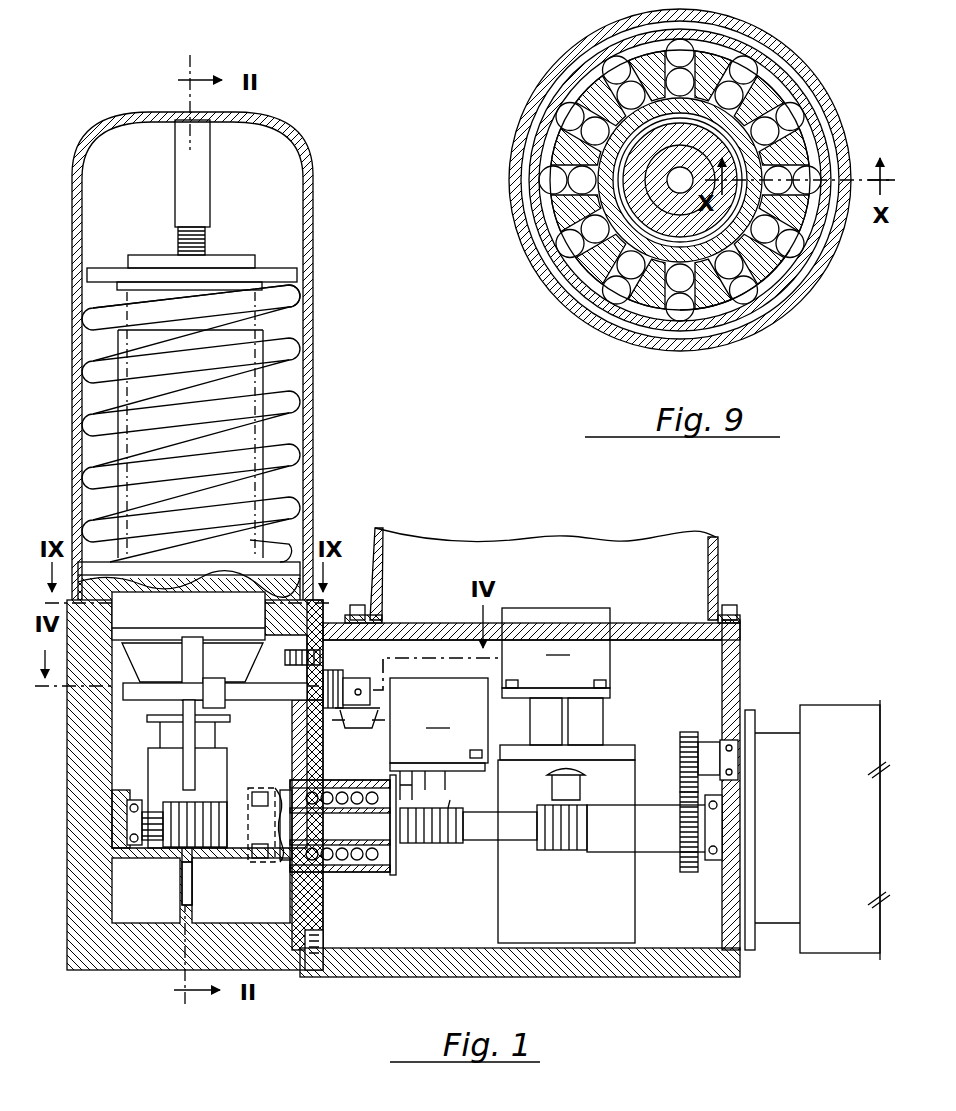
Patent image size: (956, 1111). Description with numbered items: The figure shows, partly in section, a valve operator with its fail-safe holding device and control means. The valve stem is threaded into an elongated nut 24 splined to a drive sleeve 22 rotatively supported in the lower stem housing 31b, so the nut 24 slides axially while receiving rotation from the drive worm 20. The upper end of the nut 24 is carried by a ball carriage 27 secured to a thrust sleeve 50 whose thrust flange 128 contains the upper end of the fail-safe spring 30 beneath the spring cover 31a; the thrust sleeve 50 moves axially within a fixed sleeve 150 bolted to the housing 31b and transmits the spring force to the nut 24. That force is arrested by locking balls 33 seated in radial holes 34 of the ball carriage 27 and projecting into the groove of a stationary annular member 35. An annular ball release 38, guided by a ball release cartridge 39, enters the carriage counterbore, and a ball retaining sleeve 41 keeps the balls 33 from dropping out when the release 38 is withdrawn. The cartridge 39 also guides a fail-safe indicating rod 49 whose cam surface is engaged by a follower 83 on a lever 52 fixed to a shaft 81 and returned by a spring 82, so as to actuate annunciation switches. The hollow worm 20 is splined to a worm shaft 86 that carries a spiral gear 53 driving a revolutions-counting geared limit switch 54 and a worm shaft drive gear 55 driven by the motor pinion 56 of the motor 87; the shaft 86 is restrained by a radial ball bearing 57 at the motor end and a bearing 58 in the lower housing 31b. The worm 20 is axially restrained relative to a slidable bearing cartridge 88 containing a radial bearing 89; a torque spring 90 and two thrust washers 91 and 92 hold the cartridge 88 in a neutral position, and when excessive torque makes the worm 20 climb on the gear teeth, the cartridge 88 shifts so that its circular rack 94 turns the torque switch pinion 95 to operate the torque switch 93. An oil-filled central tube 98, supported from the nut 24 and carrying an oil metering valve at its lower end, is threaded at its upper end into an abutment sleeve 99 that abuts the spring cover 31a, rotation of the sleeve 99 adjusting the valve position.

In FIG. 1, the drive worm 20 is at (193, 852).
In FIG. 1, the drive sleeve 22 is at (160, 762).
In FIG. 9, the elongated nut 24 is at (610, 250).
In FIG. 9, the ball carriage 27 is at (570, 210).
In FIG. 1, the fail-safe spring 30 is at (285, 352).
In FIG. 1, the spring cover 31a is at (310, 192).
In FIG. 1, the lower stem housing 31b is at (85, 860).
In FIG. 9, the locking balls 33 is at (787, 113).
In FIG. 9, the radially directed cylindrical holes 34 is at (770, 265).
In FIG. 9, the stationary annular member 35 is at (540, 200).
In FIG. 1, the annular ball release 38 is at (230, 719).
In FIG. 9, the annular ball release 38 is at (640, 305).
In FIG. 1, the ball release cartridge 39 is at (255, 648).
In FIG. 9, the ball retaining sleeve 41 is at (712, 290).
In FIG. 1, the fail-safe indicating rod 49 is at (195, 760).
In FIG. 1, the thrust sleeve 50 is at (270, 330).
In FIG. 1, the lever 52 is at (210, 652).
In FIG. 1, the spiral gear 53 is at (565, 850).
In FIG. 1, the revolutions-counting geared limit switch 54 is at (566, 775).
In FIG. 1, the worm shaft drive gear 55 is at (682, 865).
In FIG. 1, the motor pinion 56 is at (688, 745).
In FIG. 1, the radial ball bearing 57 is at (718, 865).
In FIG. 1, the bearing 58 is at (133, 800).
In FIG. 1, the shaft 81 is at (168, 690).
In FIG. 1, the spring 82 is at (338, 680).
In FIG. 1, the follower 83 is at (186, 645).
In FIG. 1, the worm shaft 86 is at (156, 848).
In FIG. 1, the motor 87 is at (823, 740).
In FIG. 1, the bearing cartridge 88 is at (258, 865).
In FIG. 1, the radial bearing 89 is at (242, 872).
In FIG. 1, the torque spring 90 is at (340, 872).
In FIG. 1, the thrust washer 91 is at (286, 862).
In FIG. 1, the thrust washer 92 is at (385, 778).
In FIG. 1, the torque switch 93 is at (439, 724).
In FIG. 1, the circular rack 94 is at (432, 845).
In FIG. 1, the torque switch pinion 95 is at (448, 805).
In FIG. 9, the central tube 98 is at (670, 147).
In FIG. 1, the abutment sleeve 99 is at (207, 186).
In FIG. 1, the thrust flange 128 is at (297, 272).
In FIG. 1, the fixed sleeve 150 is at (250, 434).